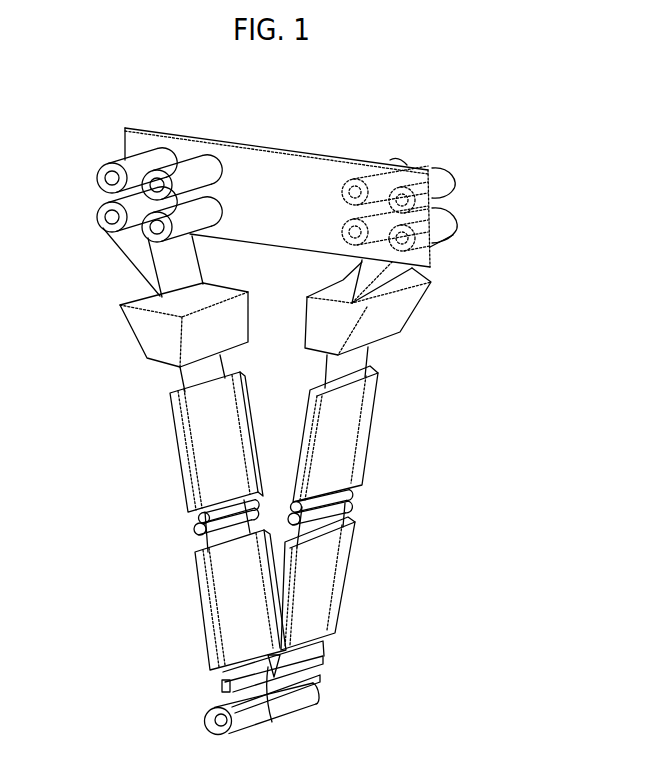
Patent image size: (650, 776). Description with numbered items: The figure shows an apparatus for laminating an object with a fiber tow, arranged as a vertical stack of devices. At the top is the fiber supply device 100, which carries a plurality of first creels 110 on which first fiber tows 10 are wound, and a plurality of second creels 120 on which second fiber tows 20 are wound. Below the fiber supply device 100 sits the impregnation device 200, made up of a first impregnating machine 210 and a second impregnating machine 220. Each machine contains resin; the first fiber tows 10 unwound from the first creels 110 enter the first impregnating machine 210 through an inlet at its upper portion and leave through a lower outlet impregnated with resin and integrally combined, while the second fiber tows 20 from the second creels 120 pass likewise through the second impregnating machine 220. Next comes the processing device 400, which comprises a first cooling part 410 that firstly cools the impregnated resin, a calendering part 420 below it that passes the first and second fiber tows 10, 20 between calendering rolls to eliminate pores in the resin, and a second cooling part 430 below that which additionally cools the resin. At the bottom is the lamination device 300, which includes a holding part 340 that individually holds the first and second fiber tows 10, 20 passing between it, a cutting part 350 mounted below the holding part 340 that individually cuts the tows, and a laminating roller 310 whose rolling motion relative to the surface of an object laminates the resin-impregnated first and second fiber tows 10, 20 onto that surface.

The fiber supply device 100 is at (105, 146).
The first creels 110 is at (100, 178).
The second creels 120 is at (445, 182).
The first fiber tows 10 is at (135, 250).
The second fiber tows 20 is at (413, 269).
The impregnation device 200 is at (106, 314).
The first impregnating machine 210 is at (143, 335).
The second impregnating machine 220 is at (400, 320).
The processing device 400 is at (383, 492).
The first cooling part 410 is at (360, 436).
The calendering part 420 is at (350, 515).
The second cooling part 430 is at (335, 572).
The lamination device 300 is at (185, 680).
The holding part 340 is at (325, 655).
The cutting part 350 is at (318, 675).
The laminating roller 310 is at (210, 720).